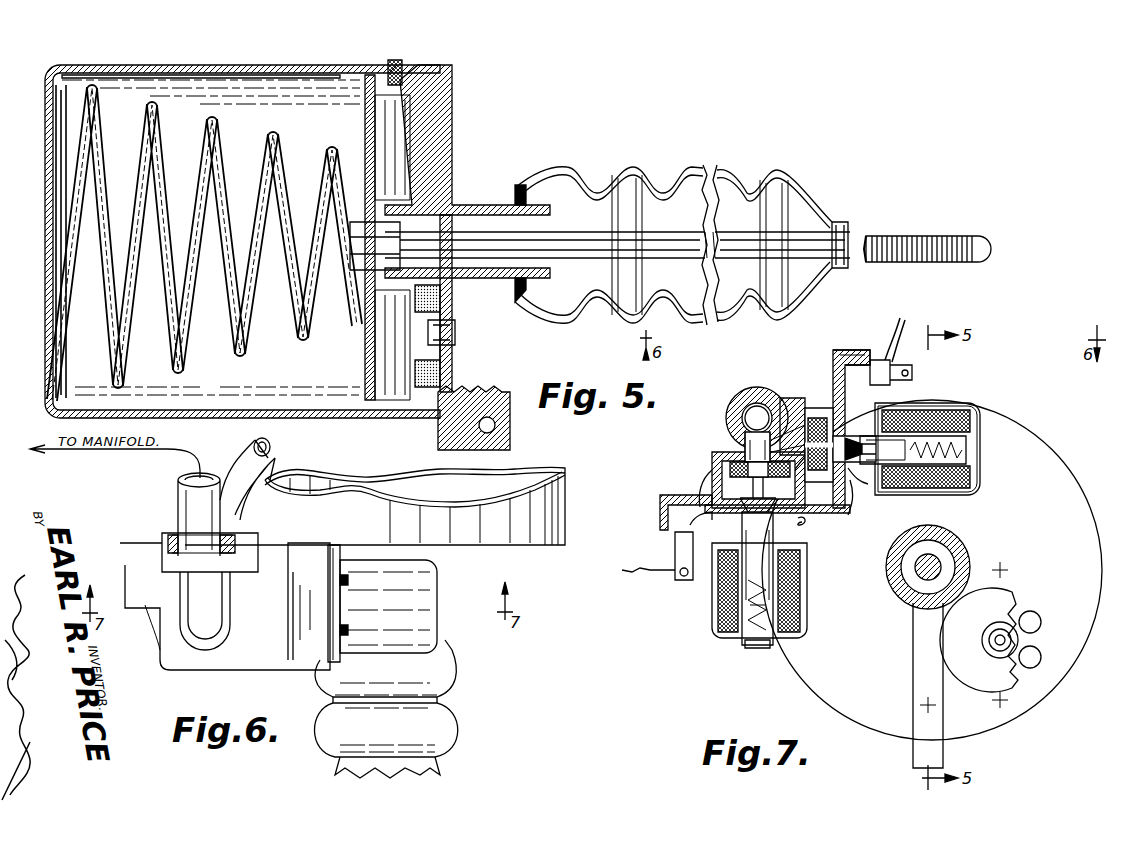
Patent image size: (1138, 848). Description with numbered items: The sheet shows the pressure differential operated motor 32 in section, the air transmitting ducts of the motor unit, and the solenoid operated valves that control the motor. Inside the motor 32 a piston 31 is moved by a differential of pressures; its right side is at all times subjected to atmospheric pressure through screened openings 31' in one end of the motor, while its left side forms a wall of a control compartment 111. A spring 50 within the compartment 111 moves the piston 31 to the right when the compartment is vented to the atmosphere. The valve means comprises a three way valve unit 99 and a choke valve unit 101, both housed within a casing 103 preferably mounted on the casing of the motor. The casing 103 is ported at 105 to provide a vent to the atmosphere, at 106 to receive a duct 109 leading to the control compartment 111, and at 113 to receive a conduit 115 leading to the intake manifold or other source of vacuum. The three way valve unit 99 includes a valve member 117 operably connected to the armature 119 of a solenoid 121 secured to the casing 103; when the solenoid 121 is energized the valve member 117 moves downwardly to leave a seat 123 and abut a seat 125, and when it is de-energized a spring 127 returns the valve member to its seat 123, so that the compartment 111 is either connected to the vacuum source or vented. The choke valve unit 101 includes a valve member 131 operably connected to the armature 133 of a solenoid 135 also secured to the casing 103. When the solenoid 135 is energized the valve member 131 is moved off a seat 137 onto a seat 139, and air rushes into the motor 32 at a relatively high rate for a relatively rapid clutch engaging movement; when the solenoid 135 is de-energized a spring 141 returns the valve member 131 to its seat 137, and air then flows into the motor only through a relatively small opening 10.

In FIG. 5, the pressure differential operated motor 32 is at (288, 52).
In FIG. 6, the pressure differential operated motor 32 is at (518, 548).
In FIG. 7, the pressure differential operated motor 32 is at (1040, 418).
In FIG. 5, the control compartment 111 is at (165, 82).
In FIG. 5, the spring 50 is at (242, 343).
In FIG. 5, the piston 31 is at (670, 255).
In FIG. 5, the screened openings 31' is at (466, 336).
In FIG. 7, the screened openings 31' is at (1011, 635).
In FIG. 6, the conduit 115 is at (270, 448).
In FIG. 6, the duct 109 is at (187, 514).
In FIG. 6, the port 106 is at (185, 552).
In FIG. 6, the casing 103 is at (272, 665).
In FIG. 7, the casing 103 is at (850, 352).
In FIG. 6, the choke valve operating solenoid 135 is at (438, 600).
In FIG. 7, the choke valve operating solenoid 135 is at (958, 497).
In FIG. 7, the choke valve unit 101 is at (985, 400).
In FIG. 7, the valve member 117 is at (718, 458).
In FIG. 7, the three way valve unit 99 is at (702, 457).
In FIG. 7, the port 113 is at (758, 404).
In FIG. 7, the seat 137 is at (795, 420).
In FIG. 7, the valve member 131 is at (817, 418).
In FIG. 7, the seat 123 is at (727, 428).
In FIG. 7, the seat 125 is at (740, 478).
In FIG. 7, the vent 10 is at (810, 526).
In FIG. 7, the port 105 is at (848, 520).
In FIG. 7, the armature 119 is at (708, 578).
In FIG. 7, the solenoid 121 is at (712, 632).
In FIG. 7, the spring 127 is at (745, 642).
In FIG. 7, the armature 133 is at (928, 405).
In FIG. 7, the spring 141 is at (970, 458).
In FIG. 7, the seat 139 is at (870, 485).